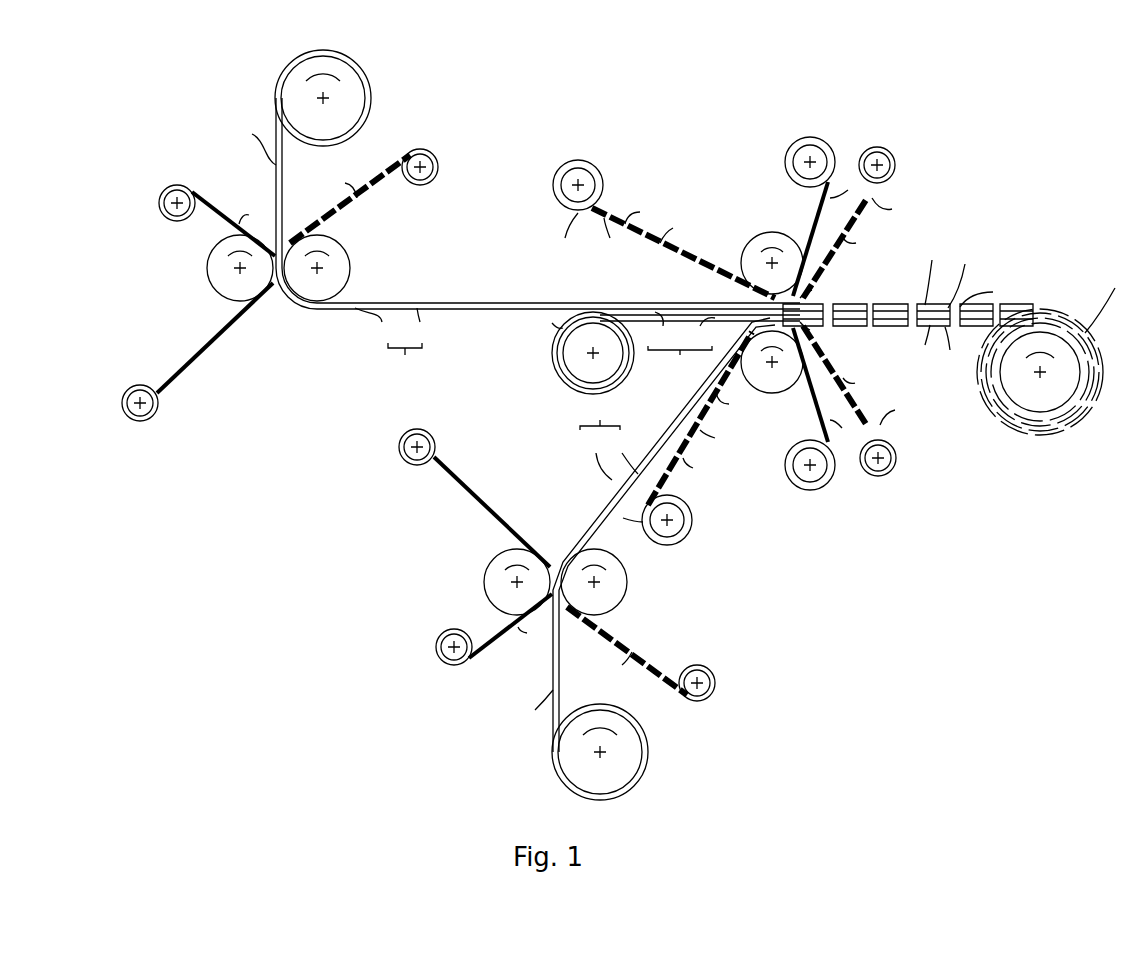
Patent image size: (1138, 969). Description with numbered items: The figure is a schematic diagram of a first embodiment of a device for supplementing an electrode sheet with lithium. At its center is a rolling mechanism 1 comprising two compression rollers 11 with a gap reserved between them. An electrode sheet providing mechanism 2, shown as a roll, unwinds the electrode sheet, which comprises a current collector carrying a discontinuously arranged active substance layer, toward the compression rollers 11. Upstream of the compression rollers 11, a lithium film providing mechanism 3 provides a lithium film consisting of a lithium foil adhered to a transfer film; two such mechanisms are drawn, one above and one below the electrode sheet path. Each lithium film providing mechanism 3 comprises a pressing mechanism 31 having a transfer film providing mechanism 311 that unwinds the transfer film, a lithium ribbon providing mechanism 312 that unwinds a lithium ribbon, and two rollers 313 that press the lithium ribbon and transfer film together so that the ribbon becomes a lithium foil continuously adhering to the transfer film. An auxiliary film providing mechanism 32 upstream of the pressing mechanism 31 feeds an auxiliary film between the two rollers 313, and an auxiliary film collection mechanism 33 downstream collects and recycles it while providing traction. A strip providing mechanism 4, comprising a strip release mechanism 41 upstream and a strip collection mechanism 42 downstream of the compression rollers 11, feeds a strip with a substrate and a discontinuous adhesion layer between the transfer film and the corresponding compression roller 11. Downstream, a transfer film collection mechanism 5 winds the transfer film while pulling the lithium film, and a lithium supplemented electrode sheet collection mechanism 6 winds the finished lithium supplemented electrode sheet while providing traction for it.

The rolling mechanism 1 is at (735, 237).
The electrode sheet providing mechanism 2 is at (587, 351).
The lithium film providing mechanism 3 is at (166, 92).
The strip providing mechanism 4 is at (546, 145).
The transfer film collection mechanism 5 is at (887, 156).
The lithium supplemented electrode sheet collection mechanism 6 is at (1040, 372).
The compression roller 11 is at (778, 236).
The pressing mechanism 31 is at (236, 180).
The auxiliary film providing mechanism 32 is at (162, 197).
The auxiliary film collection mechanism 33 is at (125, 401).
The strip release mechanism 41 is at (598, 202).
The strip collection mechanism 42 is at (786, 167).
The transfer film providing mechanism 311 is at (440, 172).
The lithium ribbon providing mechanism 312 is at (372, 100).
The roller 313 is at (210, 257).